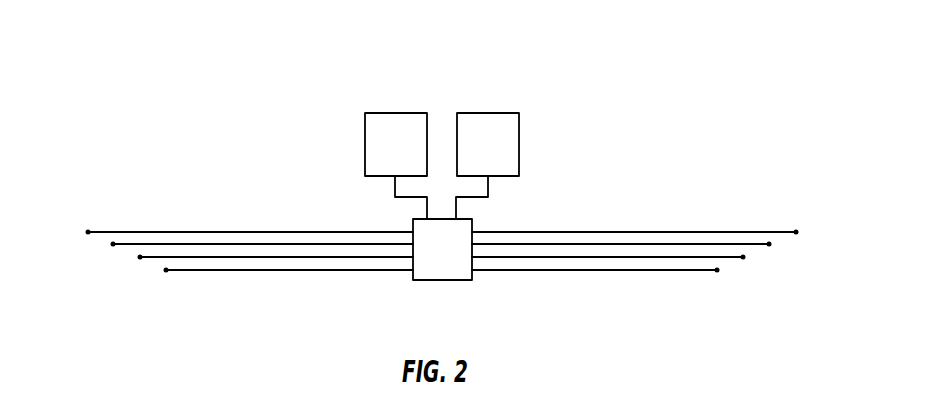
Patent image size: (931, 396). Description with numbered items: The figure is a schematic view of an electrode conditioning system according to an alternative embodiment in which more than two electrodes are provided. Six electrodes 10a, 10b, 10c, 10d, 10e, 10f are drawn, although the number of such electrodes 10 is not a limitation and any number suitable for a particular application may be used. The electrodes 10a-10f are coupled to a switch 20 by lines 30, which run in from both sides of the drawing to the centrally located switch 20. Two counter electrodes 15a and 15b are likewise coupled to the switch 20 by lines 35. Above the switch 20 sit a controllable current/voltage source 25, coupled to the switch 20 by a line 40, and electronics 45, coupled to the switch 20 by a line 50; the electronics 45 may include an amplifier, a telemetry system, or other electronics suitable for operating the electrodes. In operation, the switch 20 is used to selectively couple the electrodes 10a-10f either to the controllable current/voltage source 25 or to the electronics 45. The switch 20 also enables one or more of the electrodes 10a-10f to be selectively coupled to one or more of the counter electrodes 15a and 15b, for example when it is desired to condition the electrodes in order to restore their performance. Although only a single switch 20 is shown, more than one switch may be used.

The electrodes 10 is at (548, 58).
The electrode 10a is at (88, 231).
The electrode 10b is at (796, 232).
The electrode 10c is at (113, 244).
The electrode 10d is at (769, 244).
The electrode 10e is at (140, 257).
The electrode 10f is at (743, 257).
The counter electrode 15a is at (166, 270).
The counter electrode 15b is at (717, 270).
The switch 20 is at (455, 280).
The controllable current/voltage source 25 is at (487, 113).
The lines 30 is at (277, 257).
The lines 35 is at (317, 270).
The line 40 is at (477, 198).
The electronics 45 is at (393, 113).
The line 50 is at (403, 198).